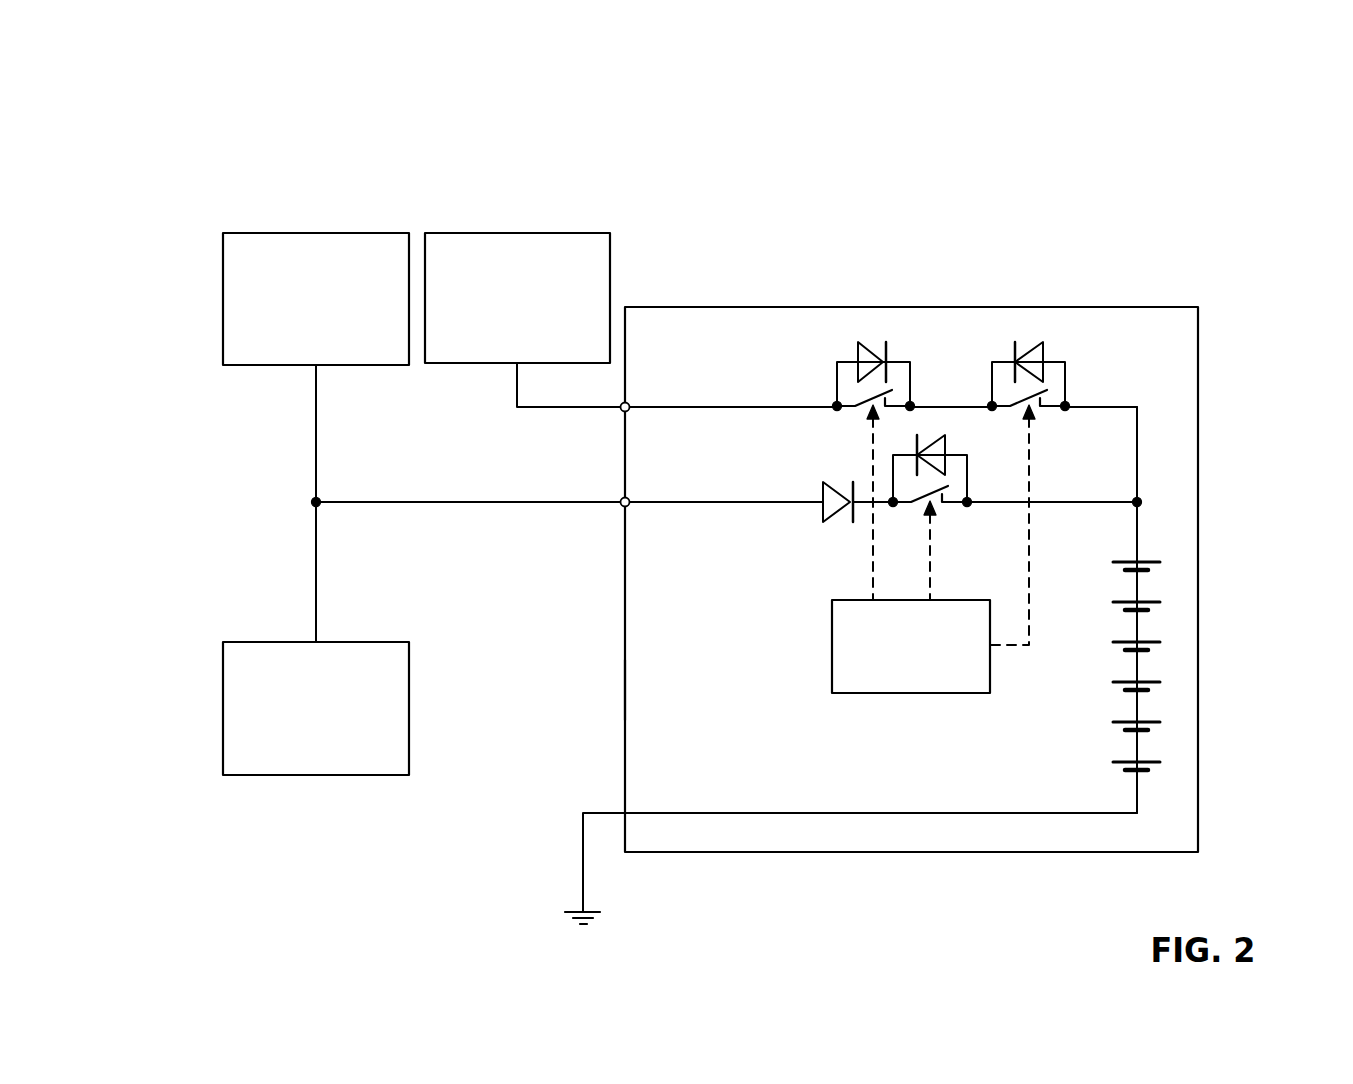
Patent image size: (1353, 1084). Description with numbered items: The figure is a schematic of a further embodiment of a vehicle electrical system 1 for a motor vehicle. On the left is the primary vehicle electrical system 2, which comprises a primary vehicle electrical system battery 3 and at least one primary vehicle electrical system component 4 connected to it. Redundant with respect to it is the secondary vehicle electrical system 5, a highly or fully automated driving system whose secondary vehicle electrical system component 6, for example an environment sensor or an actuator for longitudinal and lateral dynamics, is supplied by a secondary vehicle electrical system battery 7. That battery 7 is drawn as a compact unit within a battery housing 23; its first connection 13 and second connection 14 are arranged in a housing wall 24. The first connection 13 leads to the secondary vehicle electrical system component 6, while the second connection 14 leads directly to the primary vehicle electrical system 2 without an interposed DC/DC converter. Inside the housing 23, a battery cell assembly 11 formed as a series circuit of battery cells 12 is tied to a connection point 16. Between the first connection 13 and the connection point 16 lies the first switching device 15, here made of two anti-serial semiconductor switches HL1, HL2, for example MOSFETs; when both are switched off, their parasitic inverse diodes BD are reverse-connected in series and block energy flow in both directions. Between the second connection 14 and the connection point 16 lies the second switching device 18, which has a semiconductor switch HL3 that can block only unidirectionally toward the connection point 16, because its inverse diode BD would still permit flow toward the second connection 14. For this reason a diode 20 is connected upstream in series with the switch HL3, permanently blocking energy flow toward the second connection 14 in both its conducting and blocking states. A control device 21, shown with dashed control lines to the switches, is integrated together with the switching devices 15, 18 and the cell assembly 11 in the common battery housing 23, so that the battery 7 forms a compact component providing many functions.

The vehicle electrical system 1 is at (1142, 168).
The primary vehicle electrical system 2 is at (256, 188).
The primary vehicle electrical system battery 3 is at (316, 775).
The primary vehicle electrical system component 4 is at (343, 233).
The secondary vehicle electrical system 5 is at (951, 190).
The secondary vehicle electrical system component 6 is at (547, 233).
The secondary vehicle electrical system battery 7 is at (729, 307).
The battery cell assembly 11 is at (1162, 530).
The battery cells 12 is at (1148, 609).
The first connection 13 is at (619, 412).
The second connection 14 is at (619, 507).
The first switching device 15 is at (960, 330).
The connection point 16 is at (1147, 502).
The second switching device 18 is at (952, 528).
The diode 20 is at (841, 522).
The control device 21 is at (868, 693).
The battery housing 23 is at (745, 852).
The housing wall 24 is at (621, 692).
The semiconductor switch HL1 is at (900, 353).
The semiconductor switch HL2 is at (1065, 380).
The semiconductor switch HL3 is at (967, 479).
The inverse diode BD is at (876, 350).